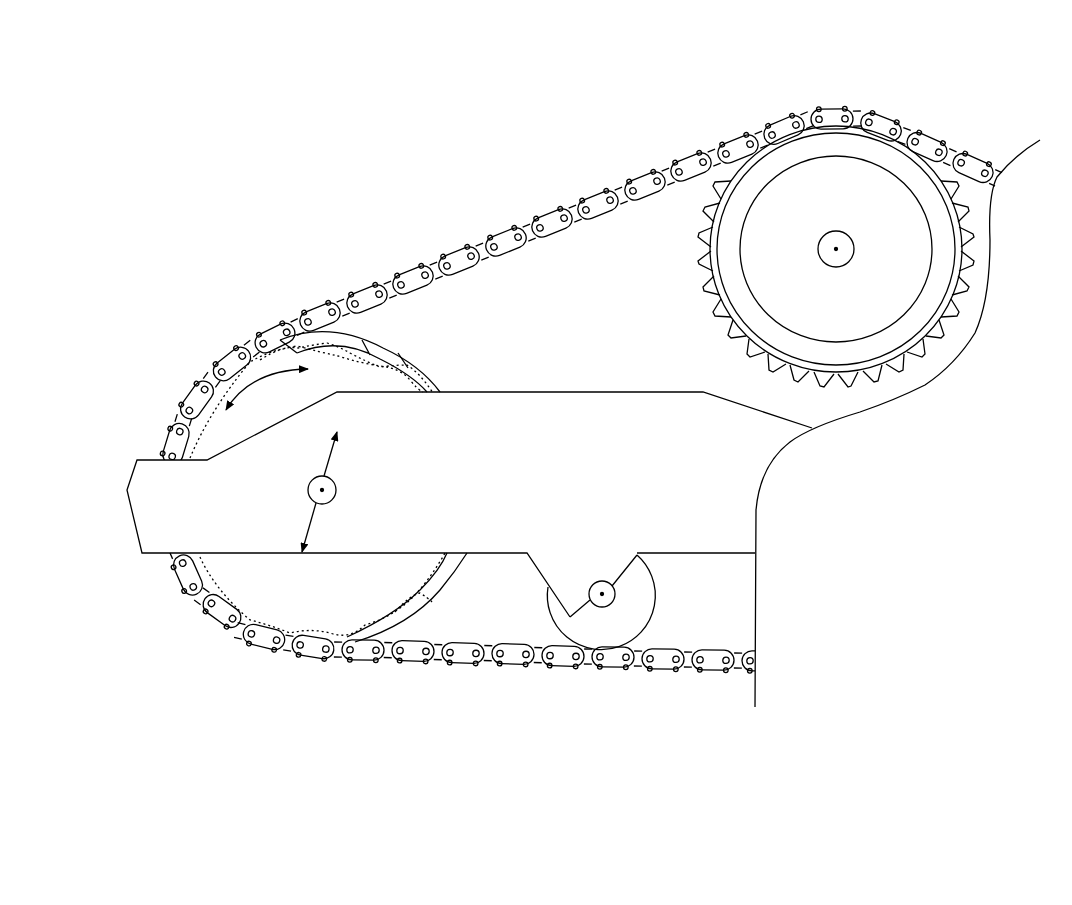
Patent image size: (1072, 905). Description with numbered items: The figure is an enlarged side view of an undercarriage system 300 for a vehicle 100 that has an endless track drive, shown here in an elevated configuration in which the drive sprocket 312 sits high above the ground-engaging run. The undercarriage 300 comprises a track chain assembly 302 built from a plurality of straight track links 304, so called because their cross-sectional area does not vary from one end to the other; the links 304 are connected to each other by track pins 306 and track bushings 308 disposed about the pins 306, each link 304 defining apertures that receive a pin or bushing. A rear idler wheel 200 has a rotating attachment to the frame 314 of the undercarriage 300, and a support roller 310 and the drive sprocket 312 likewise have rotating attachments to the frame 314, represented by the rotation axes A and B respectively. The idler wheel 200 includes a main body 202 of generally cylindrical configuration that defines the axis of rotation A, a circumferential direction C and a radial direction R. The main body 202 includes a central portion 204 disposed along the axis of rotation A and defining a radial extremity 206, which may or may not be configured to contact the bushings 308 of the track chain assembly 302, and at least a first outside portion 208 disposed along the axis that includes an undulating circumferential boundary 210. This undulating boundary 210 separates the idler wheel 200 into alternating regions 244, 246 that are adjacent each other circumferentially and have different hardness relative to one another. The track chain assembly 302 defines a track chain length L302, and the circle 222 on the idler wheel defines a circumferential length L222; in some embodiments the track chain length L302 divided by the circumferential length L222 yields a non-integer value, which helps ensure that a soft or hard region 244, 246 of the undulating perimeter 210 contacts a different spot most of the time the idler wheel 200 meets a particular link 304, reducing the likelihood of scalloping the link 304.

The vehicle 100 is at (170, 316).
The idler wheel 200 is at (444, 376).
The main body 202 is at (362, 477).
The central portion 204 is at (352, 330).
The radial extremity 206 is at (446, 381).
The first outside portion 208 is at (352, 612).
The undulating circumferential boundary 210 is at (438, 604).
The circle 222 is at (368, 342).
The circumferential length L222 is at (360, 362).
The region 244 is at (380, 342).
The region 246 is at (378, 365).
The undercarriage system 300 is at (175, 582).
The track chain assembly 302 is at (510, 672).
The track chain length L302 is at (633, 200).
The track link 304 is at (282, 336).
The track pin 306 is at (575, 650).
The track bushing 308 is at (559, 657).
The support roller 310 is at (645, 598).
The drive sprocket 312 is at (730, 332).
The frame 314 is at (142, 495).
The axis of rotation A is at (330, 498).
The rotation axis B is at (836, 251).
The circumferential direction C is at (258, 386).
The radial direction R is at (348, 452).